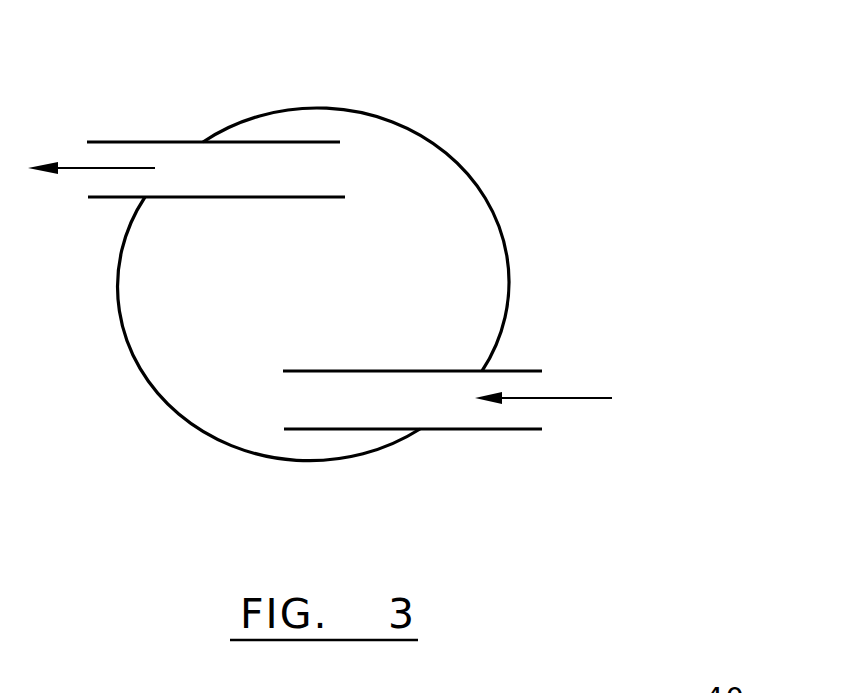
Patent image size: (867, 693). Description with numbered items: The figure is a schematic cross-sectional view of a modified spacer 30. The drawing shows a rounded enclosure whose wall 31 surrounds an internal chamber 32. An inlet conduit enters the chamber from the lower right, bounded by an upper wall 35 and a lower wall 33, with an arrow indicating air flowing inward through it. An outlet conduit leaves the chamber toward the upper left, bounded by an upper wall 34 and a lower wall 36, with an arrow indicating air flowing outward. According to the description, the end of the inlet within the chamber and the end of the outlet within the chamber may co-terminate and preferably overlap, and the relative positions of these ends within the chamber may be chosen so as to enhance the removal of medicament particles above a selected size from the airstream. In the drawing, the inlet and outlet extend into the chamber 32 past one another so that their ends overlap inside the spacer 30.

The heat exchanger 30 is at (456, 142).
The housing wall 31 is at (505, 248).
The interior chamber 32 is at (453, 284).
The inlet conduit lower wall 33 is at (505, 429).
The outlet conduit upper wall 34 is at (130, 142).
The inlet conduit upper wall 35 is at (308, 372).
The outlet conduit lower wall 36 is at (312, 197).